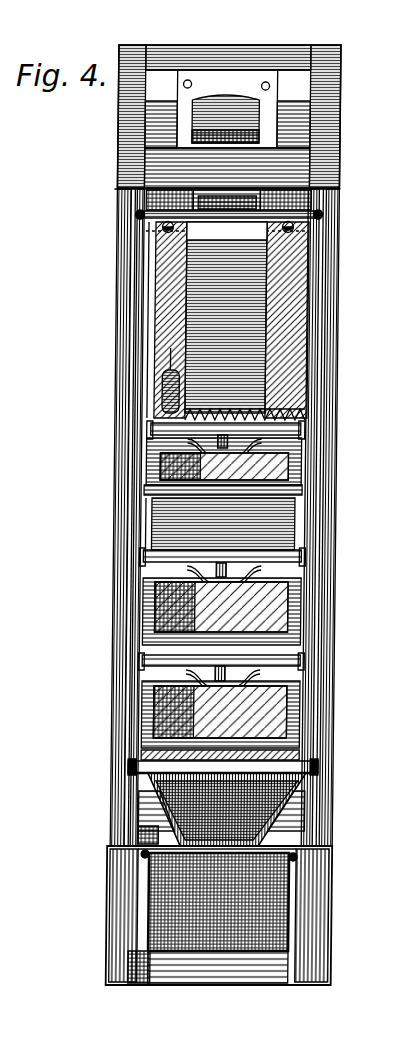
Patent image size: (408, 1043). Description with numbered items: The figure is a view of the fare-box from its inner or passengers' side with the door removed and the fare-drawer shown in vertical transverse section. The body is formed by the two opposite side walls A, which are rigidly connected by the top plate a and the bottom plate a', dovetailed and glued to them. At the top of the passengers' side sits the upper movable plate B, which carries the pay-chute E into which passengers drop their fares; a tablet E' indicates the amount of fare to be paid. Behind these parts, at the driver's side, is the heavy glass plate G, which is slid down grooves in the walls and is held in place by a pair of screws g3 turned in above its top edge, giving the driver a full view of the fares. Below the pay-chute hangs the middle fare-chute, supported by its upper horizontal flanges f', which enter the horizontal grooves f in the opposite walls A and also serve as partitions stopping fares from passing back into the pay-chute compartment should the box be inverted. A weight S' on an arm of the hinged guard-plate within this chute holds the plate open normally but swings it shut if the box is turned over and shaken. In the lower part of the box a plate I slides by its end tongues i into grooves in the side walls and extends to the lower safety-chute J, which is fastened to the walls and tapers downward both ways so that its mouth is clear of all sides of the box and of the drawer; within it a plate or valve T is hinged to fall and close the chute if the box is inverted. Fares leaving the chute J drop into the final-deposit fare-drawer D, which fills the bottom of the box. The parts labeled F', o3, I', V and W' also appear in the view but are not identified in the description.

The top plate a is at (228, 104).
The upper movable plate B is at (227, 139).
The tablet E' is at (228, 109).
The pay-chute E is at (227, 190).
The upper horizontal flanges f' is at (228, 200).
The horizontal grooves f is at (221, 233).
The side walls A is at (124, 468).
The screws g3 is at (226, 241).
The glass plate G is at (228, 320).
The upper chamber F' is at (226, 317).
The weight S' is at (184, 380).
The spring o3 is at (245, 415).
The upper tray compartment I' is at (224, 458).
The plate I is at (224, 637).
The compartment V is at (221, 616).
The compartment W' is at (220, 713).
The end tongues i is at (126, 761).
The lower safety-chute J is at (222, 809).
The plate or valve T is at (208, 841).
The final-deposit fare-drawer D is at (218, 902).
The bottom plate a' is at (218, 927).